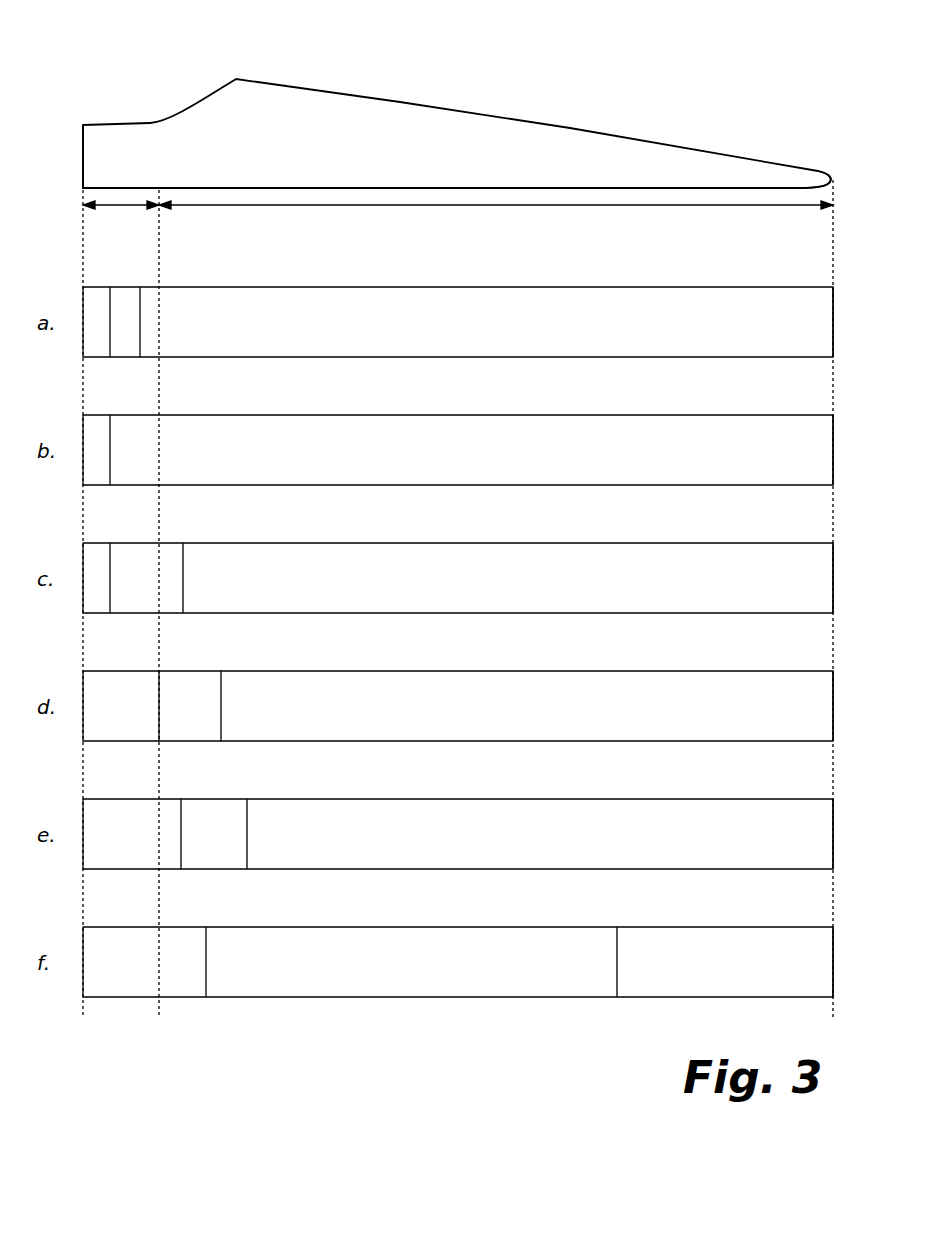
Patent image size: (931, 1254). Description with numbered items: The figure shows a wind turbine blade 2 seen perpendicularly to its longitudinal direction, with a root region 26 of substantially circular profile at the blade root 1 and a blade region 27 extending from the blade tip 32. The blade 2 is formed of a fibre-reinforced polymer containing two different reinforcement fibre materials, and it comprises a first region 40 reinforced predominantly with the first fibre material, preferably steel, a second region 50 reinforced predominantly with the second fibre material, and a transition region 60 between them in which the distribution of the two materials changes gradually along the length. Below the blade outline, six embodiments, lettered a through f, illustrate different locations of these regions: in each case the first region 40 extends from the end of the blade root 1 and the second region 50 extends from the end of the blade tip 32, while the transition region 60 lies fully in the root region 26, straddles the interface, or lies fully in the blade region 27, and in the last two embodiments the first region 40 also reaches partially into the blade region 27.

The wind turbine blade 2 is at (145, 67).
The blade root 1 is at (115, 140).
The blade tip 32 is at (805, 177).
The root region 26 is at (118, 208).
The blade region 27 is at (478, 208).
The first region 40 is at (98, 330).
The second region 50 is at (433, 330).
The transition region 60 is at (127, 330).